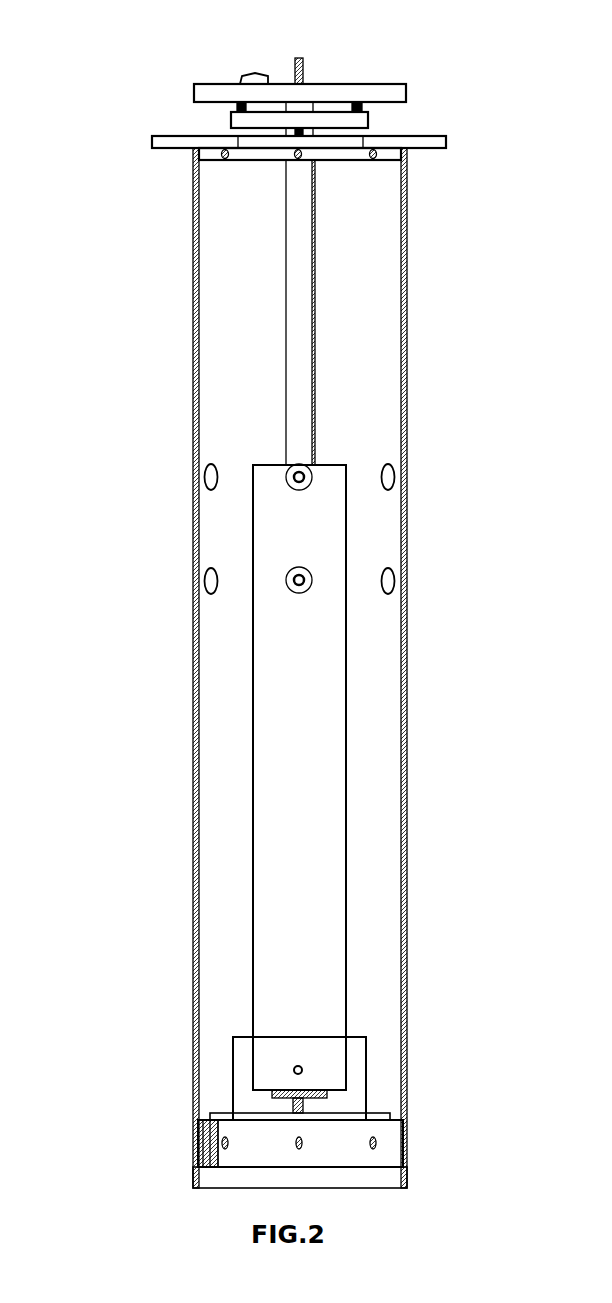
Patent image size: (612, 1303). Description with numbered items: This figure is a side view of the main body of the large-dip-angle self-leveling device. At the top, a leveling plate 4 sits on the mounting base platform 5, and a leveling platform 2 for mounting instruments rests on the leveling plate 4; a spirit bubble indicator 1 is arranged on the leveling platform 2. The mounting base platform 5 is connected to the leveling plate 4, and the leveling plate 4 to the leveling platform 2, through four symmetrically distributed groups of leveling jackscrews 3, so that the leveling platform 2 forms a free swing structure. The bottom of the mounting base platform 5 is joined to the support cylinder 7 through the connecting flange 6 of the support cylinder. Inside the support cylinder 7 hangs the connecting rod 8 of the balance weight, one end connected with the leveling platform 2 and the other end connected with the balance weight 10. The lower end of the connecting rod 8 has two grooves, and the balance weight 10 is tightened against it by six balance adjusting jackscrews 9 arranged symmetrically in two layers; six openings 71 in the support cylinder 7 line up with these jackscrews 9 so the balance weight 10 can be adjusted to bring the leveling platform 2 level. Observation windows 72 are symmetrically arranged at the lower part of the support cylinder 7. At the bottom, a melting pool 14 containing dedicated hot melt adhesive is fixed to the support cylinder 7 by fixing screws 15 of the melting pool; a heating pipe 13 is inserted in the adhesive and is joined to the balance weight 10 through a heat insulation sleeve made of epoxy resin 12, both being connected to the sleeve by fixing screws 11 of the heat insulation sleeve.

The spirit bubble indicator 1 is at (245, 76).
The leveling platform 2 is at (343, 95).
The leveling jackscrew 3 is at (237, 105).
The leveling plate 4 is at (357, 120).
The mounting base platform 5 is at (210, 142).
The connecting flange of the support cylinder 6 is at (392, 153).
The support cylinder 7 is at (212, 353).
The opening 71 is at (208, 587).
The observation window 72 is at (238, 1093).
The connecting rod of balance weight 8 is at (303, 440).
The balance adjusting jackscrew 9 is at (288, 478).
The balance weight 10 is at (297, 638).
The fixing screw of the heat insulation sleeve 11 is at (302, 1067).
The heat insulation sleeve made of epoxy resin 12 is at (317, 1092).
The heating pipe 13 is at (300, 1108).
The melting pool 14 is at (337, 1150).
The fixing screw of the melting pool 15 is at (223, 1143).